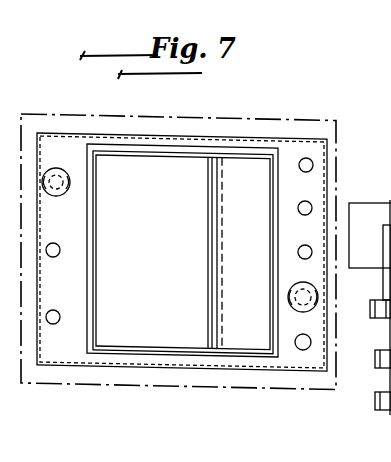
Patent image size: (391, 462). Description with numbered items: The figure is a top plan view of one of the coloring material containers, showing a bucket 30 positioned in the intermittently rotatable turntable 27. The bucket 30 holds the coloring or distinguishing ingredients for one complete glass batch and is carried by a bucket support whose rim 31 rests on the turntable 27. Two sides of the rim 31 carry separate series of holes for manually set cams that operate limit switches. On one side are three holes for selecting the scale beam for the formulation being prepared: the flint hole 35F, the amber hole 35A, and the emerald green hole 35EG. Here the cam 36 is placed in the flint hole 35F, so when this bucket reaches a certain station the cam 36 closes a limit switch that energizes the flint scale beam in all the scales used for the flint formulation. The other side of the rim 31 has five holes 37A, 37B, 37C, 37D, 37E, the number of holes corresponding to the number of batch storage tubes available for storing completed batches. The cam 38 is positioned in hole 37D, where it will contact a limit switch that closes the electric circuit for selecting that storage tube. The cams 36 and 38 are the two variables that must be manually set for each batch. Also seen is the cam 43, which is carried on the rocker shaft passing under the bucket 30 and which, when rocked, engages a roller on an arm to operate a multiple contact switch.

The turntable 27 is at (335, 130).
The bucket 30 is at (245, 156).
The rim 31 is at (289, 147).
The cam 36 is at (70, 180).
The flint hole 35F is at (58, 178).
The amber hole 35A is at (60, 249).
The emerald green hole 35EG is at (53, 324).
The storage tube selection hole 37A is at (313, 163).
The storage tube selection hole 37B is at (312, 205).
The storage tube selection hole 37C is at (312, 250).
The storage tube selection hole 37D is at (320, 294).
The storage tube selection hole 37E is at (306, 350).
The cam 38 is at (314, 309).
The cam 43 is at (378, 308).